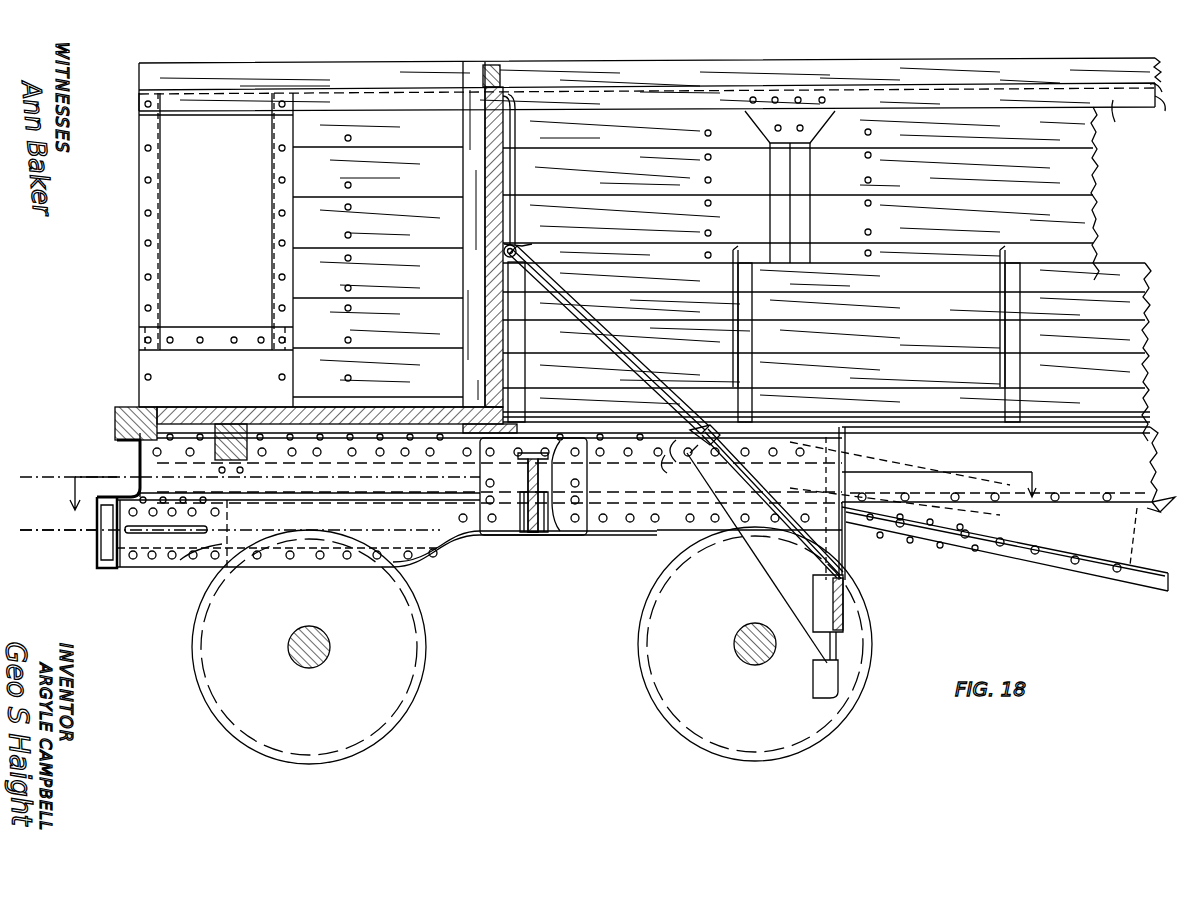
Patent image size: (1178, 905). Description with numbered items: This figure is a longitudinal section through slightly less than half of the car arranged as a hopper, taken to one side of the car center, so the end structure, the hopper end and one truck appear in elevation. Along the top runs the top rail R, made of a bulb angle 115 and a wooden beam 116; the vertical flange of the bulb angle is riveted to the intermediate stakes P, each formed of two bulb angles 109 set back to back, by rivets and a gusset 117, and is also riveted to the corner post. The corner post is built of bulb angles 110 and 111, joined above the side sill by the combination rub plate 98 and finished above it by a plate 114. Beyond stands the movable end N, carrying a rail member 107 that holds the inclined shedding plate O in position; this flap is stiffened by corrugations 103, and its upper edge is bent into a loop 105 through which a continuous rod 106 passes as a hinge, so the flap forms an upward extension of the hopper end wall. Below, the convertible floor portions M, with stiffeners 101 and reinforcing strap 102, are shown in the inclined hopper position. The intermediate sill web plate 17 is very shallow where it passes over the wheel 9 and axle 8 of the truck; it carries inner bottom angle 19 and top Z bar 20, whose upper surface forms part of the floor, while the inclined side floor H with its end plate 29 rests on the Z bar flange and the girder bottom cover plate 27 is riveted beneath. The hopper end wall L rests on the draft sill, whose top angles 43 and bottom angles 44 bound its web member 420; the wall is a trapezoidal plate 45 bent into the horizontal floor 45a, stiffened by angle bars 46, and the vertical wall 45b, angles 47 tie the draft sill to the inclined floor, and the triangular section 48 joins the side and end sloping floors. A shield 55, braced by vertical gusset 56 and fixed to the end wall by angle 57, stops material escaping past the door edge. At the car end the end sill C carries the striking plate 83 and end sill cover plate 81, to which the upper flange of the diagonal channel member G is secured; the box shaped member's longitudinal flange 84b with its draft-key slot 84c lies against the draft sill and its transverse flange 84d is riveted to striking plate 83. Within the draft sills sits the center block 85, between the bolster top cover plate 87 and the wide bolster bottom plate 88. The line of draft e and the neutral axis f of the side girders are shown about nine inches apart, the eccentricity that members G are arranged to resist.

The wooden beam 116 is at (1048, 80).
The bulb angle 115 is at (1128, 123).
The top rail R is at (1159, 109).
The movable end N is at (496, 62).
The rail member 107 is at (520, 176).
The loop 105 is at (513, 246).
The continuous rod 106 is at (523, 250).
The convertible floor portion M is at (1057, 287).
The top Z bar 20 is at (1130, 414).
The inclined side floor H is at (1117, 450).
The combination rub plate 98 is at (173, 327).
The bulb angle 110 is at (274, 204).
The bulb angle 111 is at (156, 260).
The plate 114 is at (185, 347).
The gusset 117 is at (821, 116).
The vertical stake P is at (790, 203).
The bulb angle 109 is at (806, 170).
The stiffener 101 is at (738, 254).
The reinforcing strap 102 is at (746, 366).
The inclined shedding plate O is at (599, 318).
The corrugation or stiffener 103 is at (628, 352).
The horizontal floor 45a is at (723, 444).
The trapezoidal shaped plate 45 is at (750, 456).
The angle bar 46 is at (676, 458).
The end sill cover plate 81 is at (130, 408).
The top angle 43 is at (375, 464).
The diagonal member G is at (430, 560).
The rail web 420 is at (533, 538).
The bolster top cover plate 87 is at (563, 486).
The center block 85 is at (544, 532).
The bolster bottom plate 88 is at (538, 532).
The bottom angle 44 is at (675, 535).
The end sill C is at (117, 440).
The striking plate 83 is at (98, 544).
The slot 84c is at (200, 560).
The vertical transverse flange 84d is at (120, 568).
The vertical longitudinal flange 84b is at (228, 524).
The neutral axis of side girders f is at (106, 471).
The line of draft e is at (159, 525).
The inner bottom angle 19 is at (1155, 575).
The end plate 29 is at (1085, 504).
The bottom cover plate 27 is at (990, 546).
The web plate 17 is at (1117, 537).
The triangular shaped section 48 is at (847, 546).
The inclined end wall L is at (846, 537).
The vertical wall 45b is at (846, 586).
The shield 55 is at (840, 672).
The angle 47 is at (757, 558).
The vertical gusset 56 is at (772, 605).
The angle 57 is at (825, 637).
The wheel 9 is at (400, 664).
The axle hub 8 is at (328, 647).